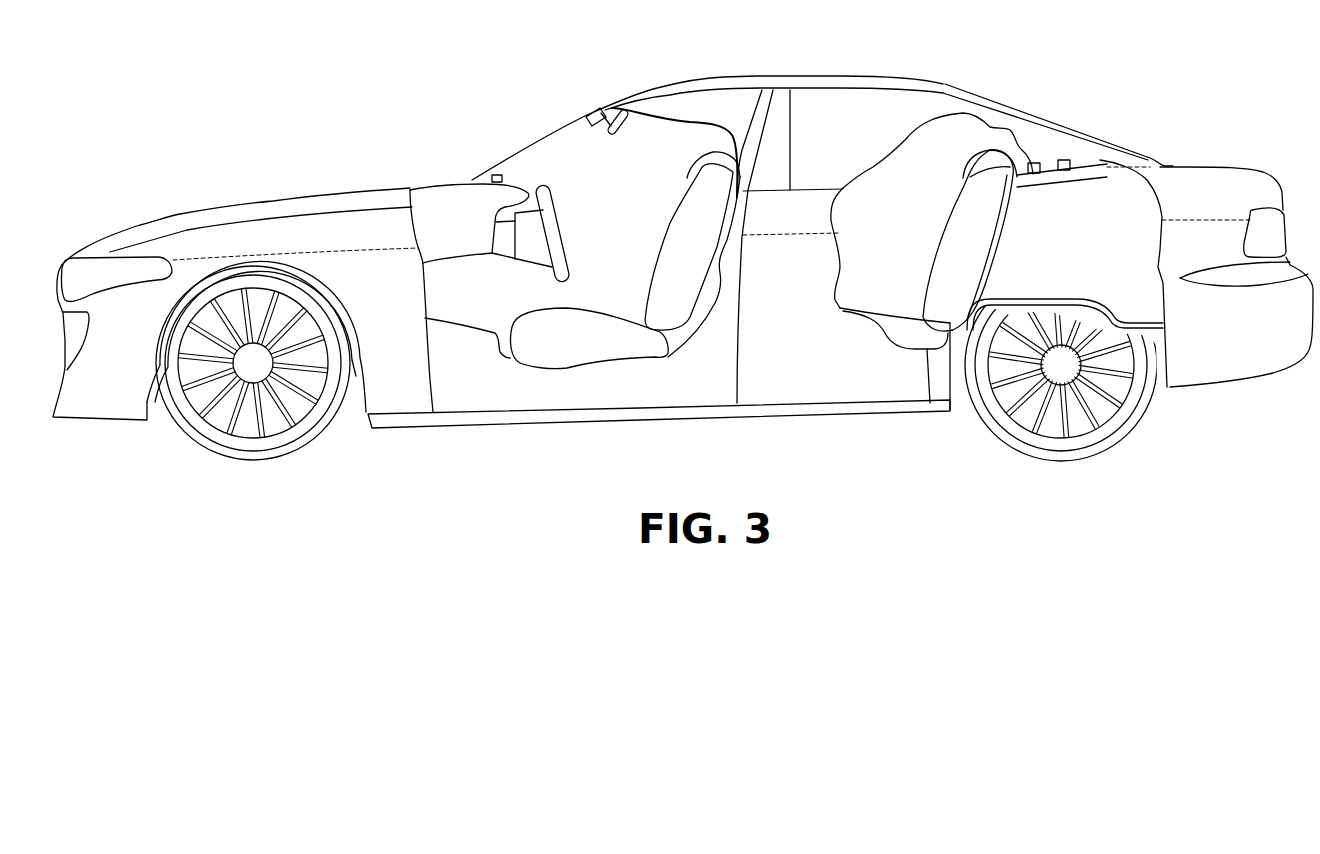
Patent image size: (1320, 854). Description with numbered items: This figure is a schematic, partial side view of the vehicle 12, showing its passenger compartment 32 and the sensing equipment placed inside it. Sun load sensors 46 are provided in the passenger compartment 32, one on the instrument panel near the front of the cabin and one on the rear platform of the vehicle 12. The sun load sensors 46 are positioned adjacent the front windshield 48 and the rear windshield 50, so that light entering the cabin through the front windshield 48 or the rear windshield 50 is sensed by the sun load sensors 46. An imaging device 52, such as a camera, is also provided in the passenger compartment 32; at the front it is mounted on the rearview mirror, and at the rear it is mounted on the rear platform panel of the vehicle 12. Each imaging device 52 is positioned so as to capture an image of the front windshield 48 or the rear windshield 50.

The vehicle 12 is at (390, 146).
The passenger compartment 32 is at (542, 295).
The sun load sensors 46 is at (495, 175).
The front windshield 48 is at (513, 155).
The rear windshield 50 is at (1070, 122).
The imaging device 52 is at (580, 115).